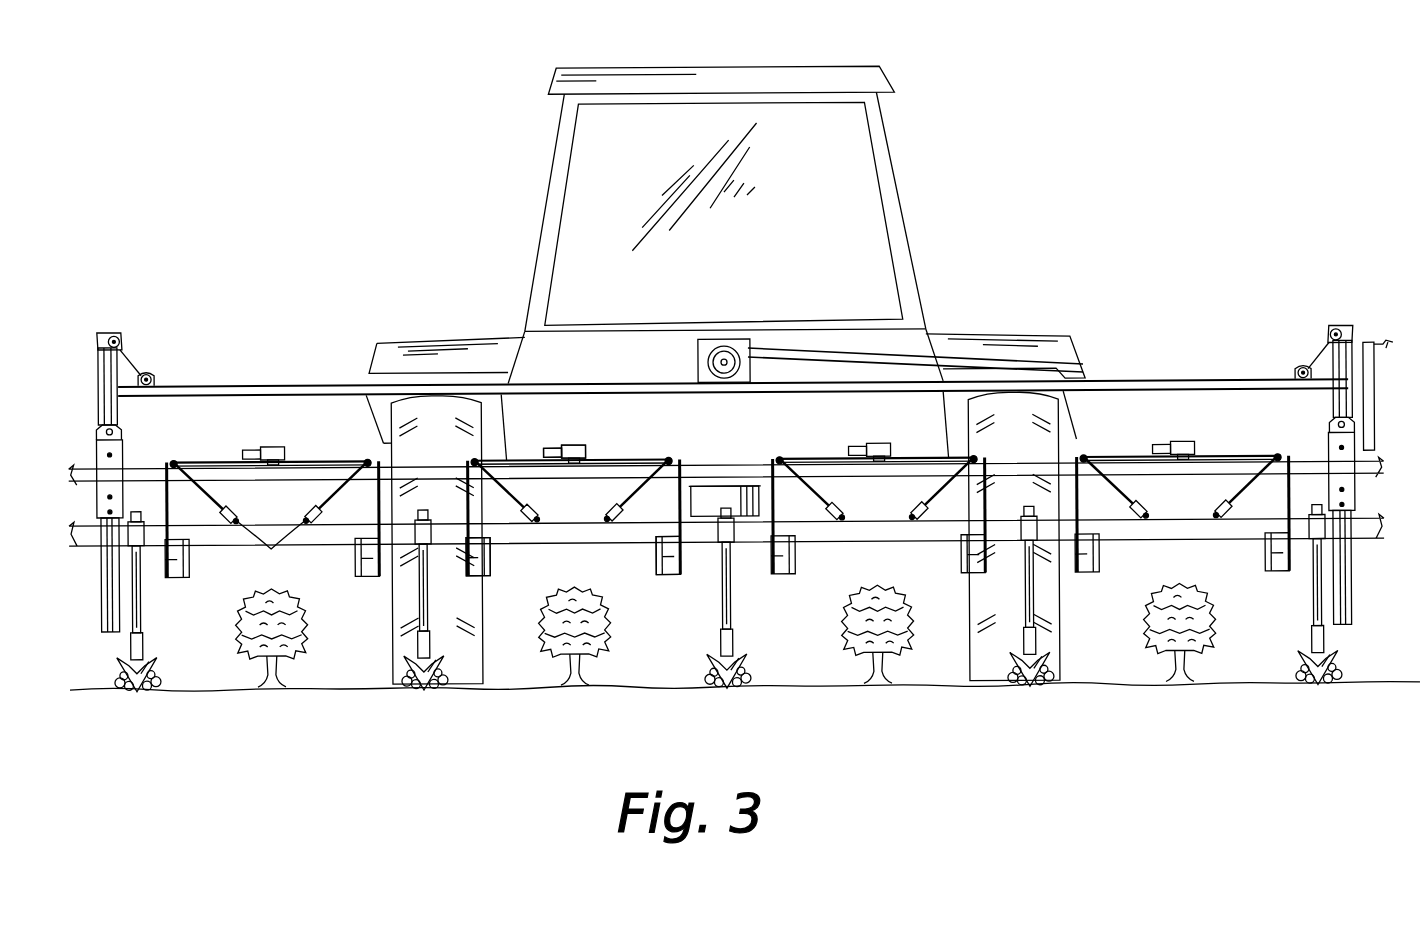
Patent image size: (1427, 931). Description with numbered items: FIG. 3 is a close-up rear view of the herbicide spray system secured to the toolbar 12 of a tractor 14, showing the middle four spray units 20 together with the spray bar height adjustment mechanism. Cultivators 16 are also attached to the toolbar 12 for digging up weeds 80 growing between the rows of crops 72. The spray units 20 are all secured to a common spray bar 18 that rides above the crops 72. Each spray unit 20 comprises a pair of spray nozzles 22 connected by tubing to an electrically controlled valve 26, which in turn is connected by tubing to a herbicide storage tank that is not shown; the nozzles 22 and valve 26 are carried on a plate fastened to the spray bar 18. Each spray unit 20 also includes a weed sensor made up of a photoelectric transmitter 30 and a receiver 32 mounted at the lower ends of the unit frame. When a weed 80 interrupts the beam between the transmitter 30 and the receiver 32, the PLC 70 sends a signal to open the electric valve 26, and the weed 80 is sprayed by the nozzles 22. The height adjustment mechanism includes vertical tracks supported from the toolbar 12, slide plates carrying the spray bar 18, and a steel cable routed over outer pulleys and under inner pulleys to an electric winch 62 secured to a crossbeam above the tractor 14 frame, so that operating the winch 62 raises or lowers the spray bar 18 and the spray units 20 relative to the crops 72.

The toolbar 12 is at (1378, 535).
The tractor 14 is at (890, 71).
The cultivators 16 is at (420, 690).
The spray bar 18 is at (1378, 469).
The spray unit 20 is at (271, 461).
The spray nozzles 22 is at (272, 550).
The electrically controlled valve 26 is at (578, 448).
The photoelectric transmitter 30 is at (480, 578).
The photoelectric receiver 32 is at (672, 578).
The electric winch 62 is at (722, 343).
The PLC 70 is at (730, 490).
The crops 72 is at (570, 668).
The weed 80 is at (726, 690).